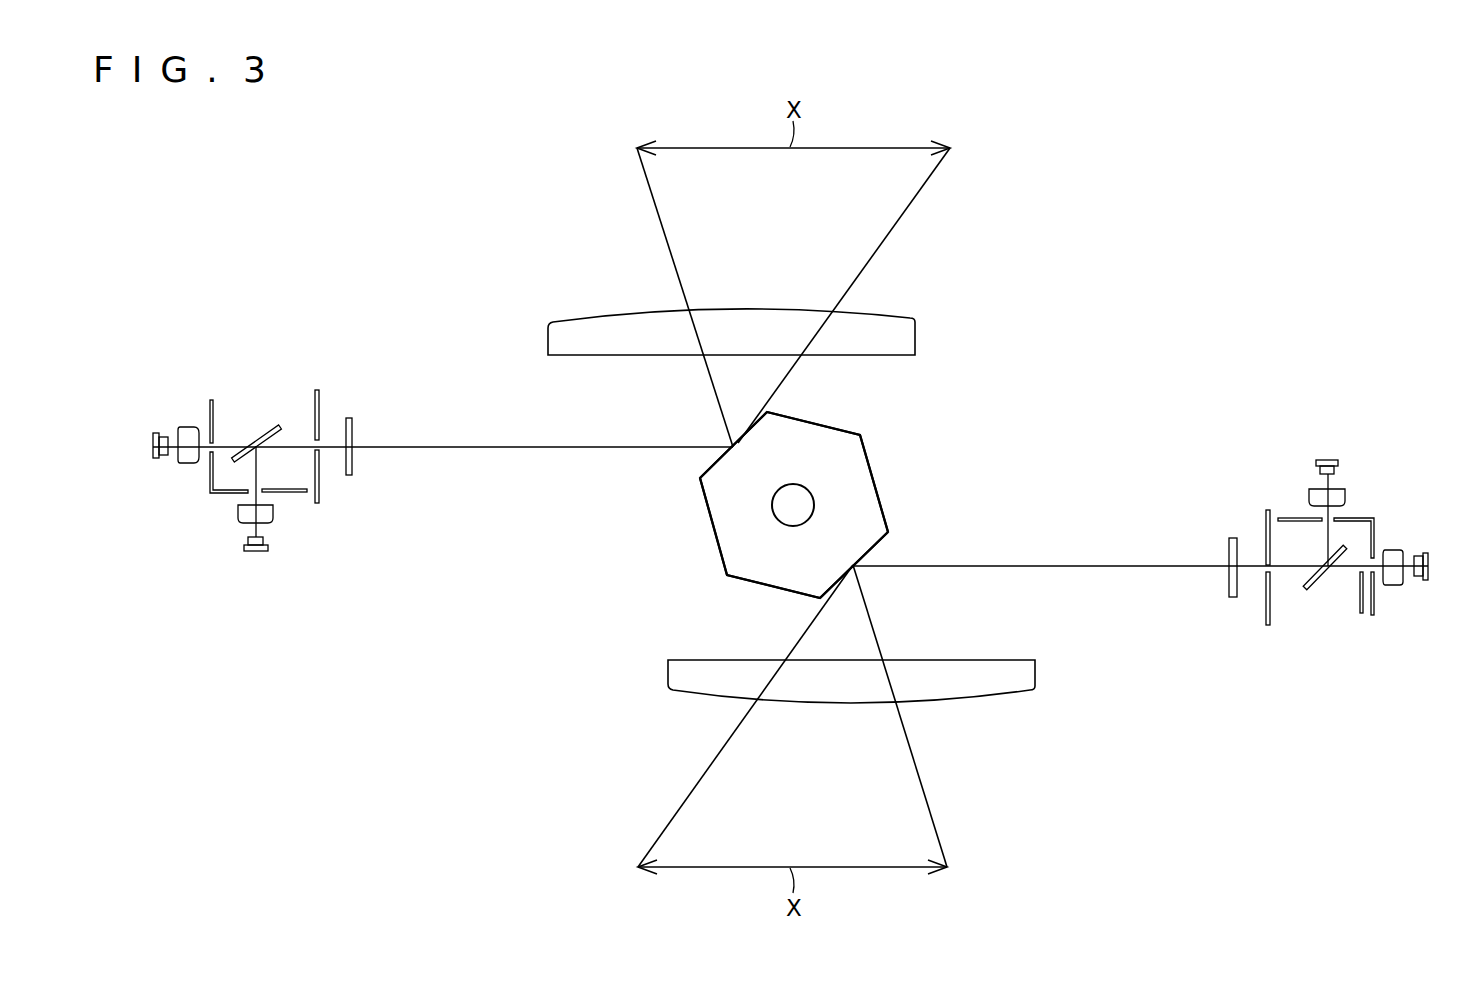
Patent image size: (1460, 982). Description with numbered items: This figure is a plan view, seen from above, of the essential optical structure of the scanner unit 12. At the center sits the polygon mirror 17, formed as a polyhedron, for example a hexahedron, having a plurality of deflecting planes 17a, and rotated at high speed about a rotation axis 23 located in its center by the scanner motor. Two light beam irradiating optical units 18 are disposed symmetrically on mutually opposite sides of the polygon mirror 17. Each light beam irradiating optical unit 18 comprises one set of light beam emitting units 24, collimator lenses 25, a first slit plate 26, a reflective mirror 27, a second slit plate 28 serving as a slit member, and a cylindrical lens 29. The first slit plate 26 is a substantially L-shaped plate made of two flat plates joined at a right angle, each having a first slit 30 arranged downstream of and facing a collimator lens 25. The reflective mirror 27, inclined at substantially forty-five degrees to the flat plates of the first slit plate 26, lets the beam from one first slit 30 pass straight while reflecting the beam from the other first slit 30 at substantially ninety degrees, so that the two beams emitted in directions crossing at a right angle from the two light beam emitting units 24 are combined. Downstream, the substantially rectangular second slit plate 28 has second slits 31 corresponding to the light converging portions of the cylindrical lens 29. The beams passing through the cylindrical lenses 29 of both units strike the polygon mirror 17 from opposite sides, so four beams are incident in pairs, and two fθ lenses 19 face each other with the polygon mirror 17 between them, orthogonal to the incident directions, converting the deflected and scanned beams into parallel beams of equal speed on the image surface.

The scanner unit 12 is at (1102, 842).
The polygon mirror 17 is at (843, 462).
The deflecting planes 17a is at (828, 425).
The light beam irradiating optical unit 18 is at (252, 368).
The fθ lens 19 is at (918, 340).
The rotation axis 23 is at (806, 494).
The light beam emitting unit 24 is at (163, 435).
The collimator lens 25 is at (188, 464).
The first slit plate 26 is at (210, 401).
The reflective mirror 27 is at (270, 431).
The second slit plate 28 is at (318, 392).
The cylindrical lens 29 is at (349, 418).
The first slit 30 is at (214, 441).
The second slit 31 is at (321, 452).